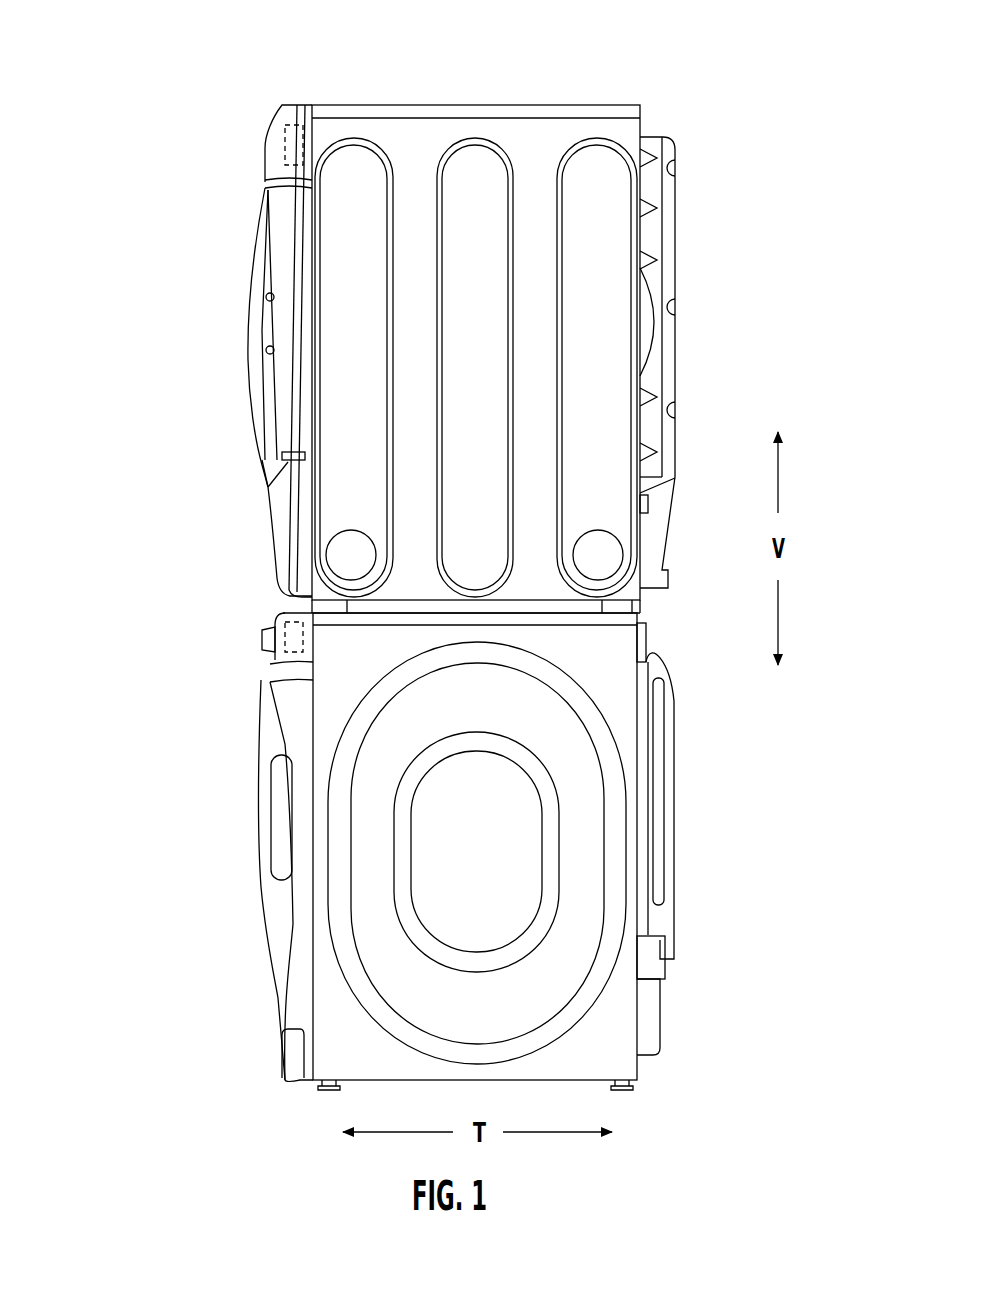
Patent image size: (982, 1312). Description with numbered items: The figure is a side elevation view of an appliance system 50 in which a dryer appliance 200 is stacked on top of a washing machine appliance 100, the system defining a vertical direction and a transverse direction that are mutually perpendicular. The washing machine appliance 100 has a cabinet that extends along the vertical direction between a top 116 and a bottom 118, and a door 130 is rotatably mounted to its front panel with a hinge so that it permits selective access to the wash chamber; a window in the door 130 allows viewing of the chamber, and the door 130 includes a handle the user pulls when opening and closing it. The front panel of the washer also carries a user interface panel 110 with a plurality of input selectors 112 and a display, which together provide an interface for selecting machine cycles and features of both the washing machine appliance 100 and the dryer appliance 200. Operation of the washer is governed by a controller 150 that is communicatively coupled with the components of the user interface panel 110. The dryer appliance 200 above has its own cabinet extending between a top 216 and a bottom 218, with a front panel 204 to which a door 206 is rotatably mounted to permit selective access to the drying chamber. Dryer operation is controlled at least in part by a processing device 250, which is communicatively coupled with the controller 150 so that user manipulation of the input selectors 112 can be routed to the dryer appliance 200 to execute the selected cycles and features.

The appliance system 50 is at (118, 80).
The washing machine appliance 100 is at (201, 801).
The user interface panel 110 is at (269, 665).
The input selectors 112 is at (255, 642).
The top 116 is at (665, 638).
The bottom 118 is at (664, 1065).
The door 130 is at (261, 915).
The controller 150 is at (268, 620).
The dryer appliance 200 is at (167, 297).
The front panel 204 is at (267, 163).
The door 206 is at (250, 417).
The top 216 is at (675, 118).
The bottom 218 is at (672, 610).
The processing device 250 is at (273, 130).